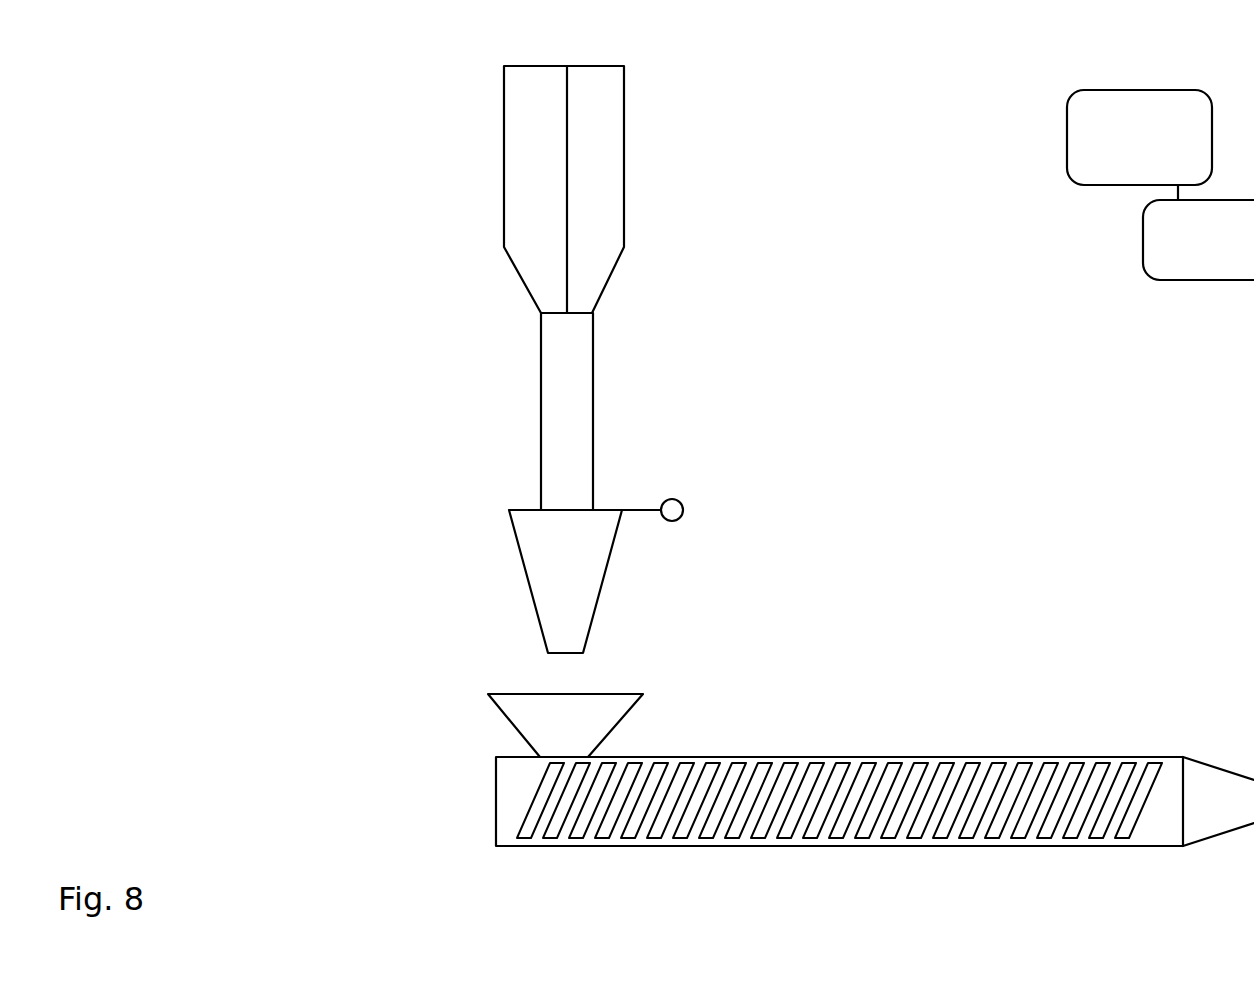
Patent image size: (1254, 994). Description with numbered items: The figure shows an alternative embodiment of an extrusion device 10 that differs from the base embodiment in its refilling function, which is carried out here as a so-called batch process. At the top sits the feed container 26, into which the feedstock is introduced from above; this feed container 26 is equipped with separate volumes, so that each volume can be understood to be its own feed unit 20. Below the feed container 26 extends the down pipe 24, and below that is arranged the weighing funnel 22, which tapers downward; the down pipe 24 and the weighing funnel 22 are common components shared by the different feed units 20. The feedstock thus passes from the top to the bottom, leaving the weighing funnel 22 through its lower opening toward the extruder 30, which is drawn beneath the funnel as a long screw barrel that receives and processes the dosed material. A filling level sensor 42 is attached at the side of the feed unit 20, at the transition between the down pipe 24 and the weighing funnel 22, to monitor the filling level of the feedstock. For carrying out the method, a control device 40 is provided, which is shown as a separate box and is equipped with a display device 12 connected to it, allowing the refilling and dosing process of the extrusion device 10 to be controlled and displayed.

The extrusion device 10 is at (386, 106).
The display device 12 is at (1214, 268).
The feed unit 20 is at (674, 190).
The weighing funnel 22 is at (590, 636).
The down pipe 24 is at (593, 357).
The feed container 26 is at (624, 88).
The extruder 30 is at (1088, 757).
The control device 40 is at (1127, 90).
The filling level sensor 42 is at (676, 499).